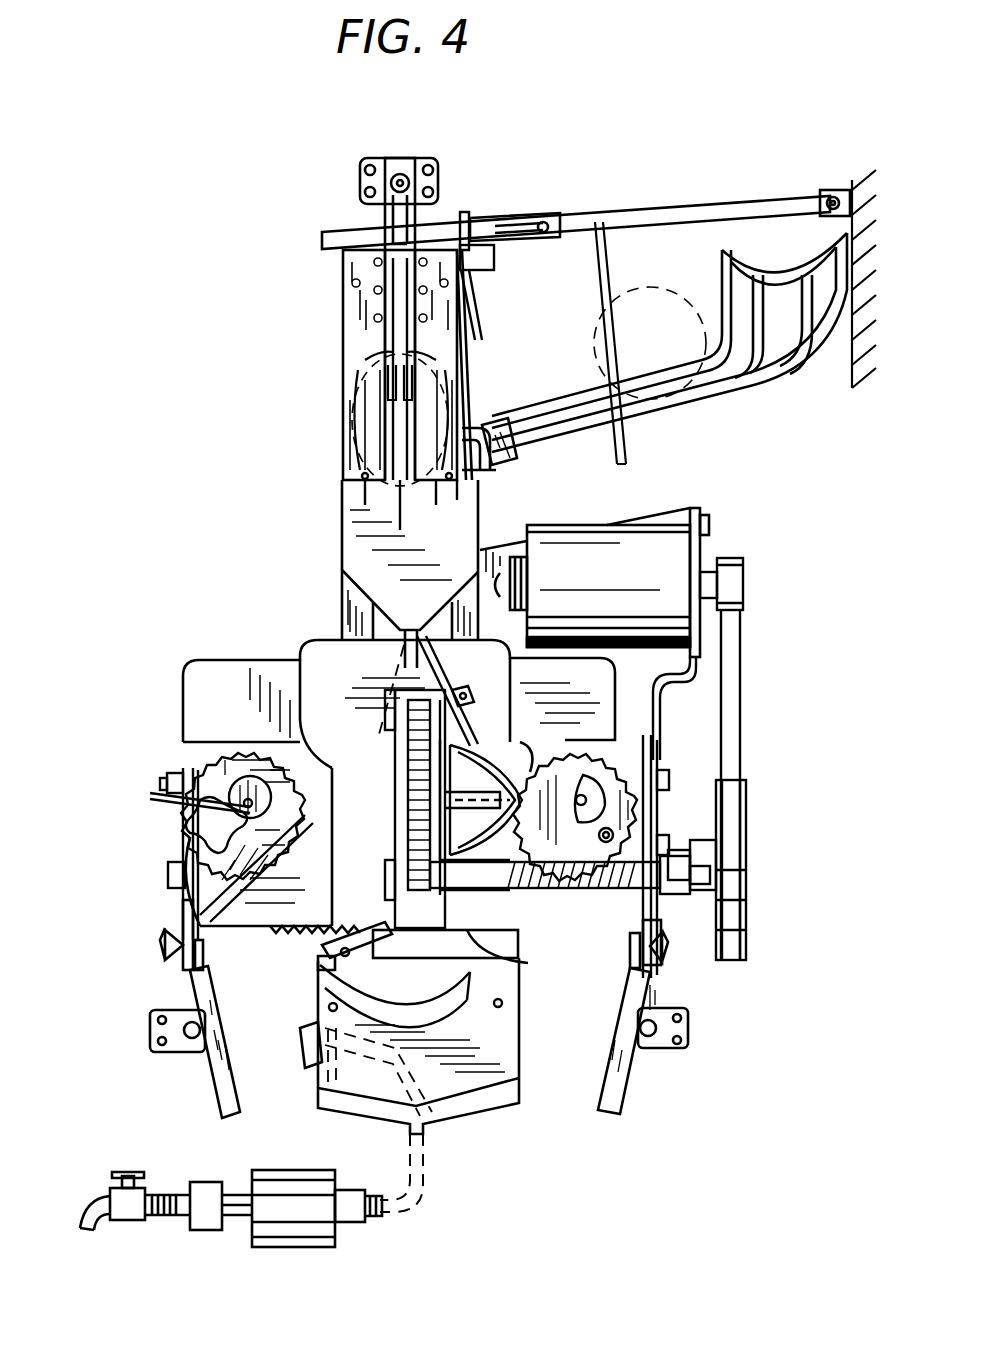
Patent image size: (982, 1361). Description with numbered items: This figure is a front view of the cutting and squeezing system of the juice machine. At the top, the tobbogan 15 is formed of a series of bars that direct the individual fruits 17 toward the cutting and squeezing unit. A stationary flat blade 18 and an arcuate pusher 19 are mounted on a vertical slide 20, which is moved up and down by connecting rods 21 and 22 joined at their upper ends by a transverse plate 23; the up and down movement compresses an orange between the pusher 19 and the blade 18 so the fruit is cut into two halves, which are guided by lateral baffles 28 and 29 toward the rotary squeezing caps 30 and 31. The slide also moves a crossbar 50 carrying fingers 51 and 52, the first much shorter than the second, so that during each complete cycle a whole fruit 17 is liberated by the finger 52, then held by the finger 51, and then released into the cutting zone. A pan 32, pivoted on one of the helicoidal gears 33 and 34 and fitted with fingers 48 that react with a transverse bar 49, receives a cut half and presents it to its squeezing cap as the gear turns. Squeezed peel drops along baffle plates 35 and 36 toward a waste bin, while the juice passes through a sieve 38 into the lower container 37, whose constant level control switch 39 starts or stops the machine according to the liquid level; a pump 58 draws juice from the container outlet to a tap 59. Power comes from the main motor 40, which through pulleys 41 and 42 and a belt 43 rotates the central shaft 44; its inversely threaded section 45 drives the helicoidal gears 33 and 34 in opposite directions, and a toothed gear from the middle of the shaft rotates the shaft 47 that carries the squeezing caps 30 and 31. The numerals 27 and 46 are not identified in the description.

The tobbogan 15 is at (768, 400).
The fruit 17 is at (678, 302).
The stationary flat blade 18 is at (352, 530).
The arcuate pusher 19 is at (358, 365).
The vertical slide 20 is at (388, 306).
The connecting rod 21 is at (352, 398).
The connecting rod 22 is at (470, 388).
The transverse plate 23 is at (350, 286).
The cutting blades 27 is at (352, 443).
The lateral baffle 28 is at (384, 680).
The lateral baffle 29 is at (470, 720).
The rotary squeezing cap 30 is at (305, 855).
The rotary squeezing cap 31 is at (487, 795).
The pan 32 is at (168, 872).
The helicoidal gear 33 is at (228, 768).
The helicoidal gear 34 is at (630, 816).
The baffle plate 35 is at (222, 1083).
The baffle plate 36 is at (622, 1092).
The lower container 37 is at (462, 1098).
The sieve 38 is at (340, 990).
The constant level control switch 39 is at (345, 1078).
The main motor 40 is at (672, 550).
The pulley 41 is at (745, 592).
The pulley 42 is at (738, 862).
The belt 43 is at (735, 664).
The central shaft 44 is at (512, 960).
The threaded section 45 is at (612, 892).
The rack 46 is at (412, 790).
The shaft 47 is at (460, 880).
The finger 48 is at (140, 800).
The transverse bar 49 is at (146, 780).
The crossbar 50 is at (670, 215).
The finger 51 is at (482, 302).
The finger 52 is at (600, 297).
The pump 58 is at (278, 1180).
The tap 59 is at (98, 1200).